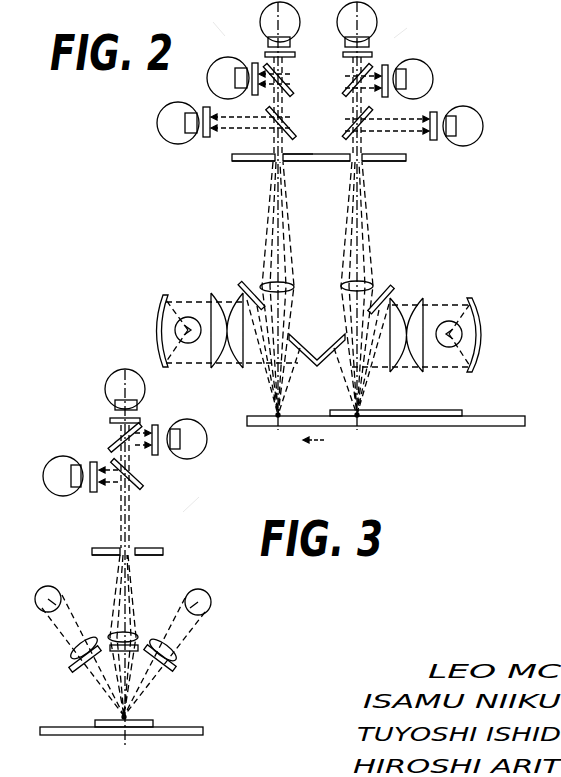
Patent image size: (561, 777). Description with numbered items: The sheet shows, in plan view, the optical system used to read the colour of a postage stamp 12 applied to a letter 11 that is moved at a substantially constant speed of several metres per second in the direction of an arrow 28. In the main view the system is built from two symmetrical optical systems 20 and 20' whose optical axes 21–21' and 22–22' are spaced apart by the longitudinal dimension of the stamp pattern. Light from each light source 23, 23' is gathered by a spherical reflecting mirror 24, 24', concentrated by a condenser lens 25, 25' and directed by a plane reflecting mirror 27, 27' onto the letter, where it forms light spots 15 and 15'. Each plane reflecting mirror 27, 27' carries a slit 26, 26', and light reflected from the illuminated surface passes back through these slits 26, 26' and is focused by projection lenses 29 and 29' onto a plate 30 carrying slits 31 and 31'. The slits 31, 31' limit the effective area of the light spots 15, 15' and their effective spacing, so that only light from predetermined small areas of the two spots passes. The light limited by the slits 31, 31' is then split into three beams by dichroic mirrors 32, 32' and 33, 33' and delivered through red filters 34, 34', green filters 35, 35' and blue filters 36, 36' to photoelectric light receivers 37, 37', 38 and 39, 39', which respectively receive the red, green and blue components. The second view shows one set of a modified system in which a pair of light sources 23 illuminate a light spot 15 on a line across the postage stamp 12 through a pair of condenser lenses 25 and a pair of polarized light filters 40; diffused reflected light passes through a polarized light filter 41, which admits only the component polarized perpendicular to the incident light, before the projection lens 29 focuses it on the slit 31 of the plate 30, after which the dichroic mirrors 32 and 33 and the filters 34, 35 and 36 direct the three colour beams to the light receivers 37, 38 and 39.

In FIG. 2, the letter 11 is at (487, 427).
In FIG. 3, the letter 11 is at (185, 736).
In FIG. 2, the postage stamp 12 is at (458, 409).
In FIG. 3, the postage stamp 12 is at (154, 724).
In FIG. 2, the light spot 15 is at (379, 396).
In FIG. 3, the light spot 15 is at (90, 709).
In FIG. 2, the light spot 15' is at (259, 404).
In FIG. 2, the optical system 20 is at (416, 23).
In FIG. 3, the optical system 20 is at (207, 494).
In FIG. 2, the optical system 20' is at (213, 18).
In FIG. 2, the optical axis 21 is at (375, 23).
In FIG. 3, the optical axis 21 is at (121, 376).
In FIG. 2, the optical axis 21' is at (365, 437).
In FIG. 3, the optical axis 21' is at (118, 742).
In FIG. 2, the optical axis 22 is at (297, 23).
In FIG. 2, the optical axis 22' is at (271, 436).
In FIG. 2, the light source 23 is at (445, 308).
In FIG. 3, the light source 23 is at (137, 590).
In FIG. 2, the light source 23' is at (188, 303).
In FIG. 2, the spherical reflecting mirror 24 is at (486, 348).
In FIG. 2, the spherical reflecting mirror 24' is at (146, 331).
In FIG. 2, the condenser lens 25 is at (414, 352).
In FIG. 3, the condenser lens 25 is at (125, 652).
In FIG. 2, the condenser lens 25' is at (228, 348).
In FIG. 2, the slit 26 is at (332, 337).
In FIG. 2, the slit 26' is at (317, 361).
In FIG. 2, the plane reflecting mirror 27 is at (354, 350).
In FIG. 2, the plane reflecting mirror 27' is at (284, 348).
In FIG. 2, the arrow 28 is at (327, 436).
In FIG. 2, the projection lens 29 is at (374, 276).
In FIG. 3, the projection lens 29 is at (141, 618).
In FIG. 2, the projection lens 29' is at (296, 282).
In FIG. 2, the plate 30 is at (302, 162).
In FIG. 3, the plate 30 is at (162, 553).
In FIG. 2, the slit 31 is at (384, 173).
In FIG. 3, the slit 31 is at (127, 535).
In FIG. 2, the slit 31' is at (249, 174).
In FIG. 2, the dichroic mirror 32 is at (317, 173).
In FIG. 3, the dichroic mirror 32 is at (151, 488).
In FIG. 2, the dichroic mirror 32' is at (308, 138).
In FIG. 2, the dichroic mirror 33 is at (349, 122).
In FIG. 3, the dichroic mirror 33 is at (110, 455).
In FIG. 2, the dichroic mirror 33' is at (298, 118).
In FIG. 2, the red filter 34 is at (397, 145).
In FIG. 3, the red filter 34 is at (92, 499).
In FIG. 2, the red filter 34' is at (235, 140).
In FIG. 2, the green filter 35 is at (396, 67).
In FIG. 3, the green filter 35 is at (140, 426).
In FIG. 2, the green filter 35' is at (265, 92).
In FIG. 2, the blue filter 36 is at (342, 74).
In FIG. 3, the blue filter 36 is at (103, 401).
In FIG. 2, the blue filter 36' is at (301, 52).
In FIG. 2, the photoelectric light receiver 37 is at (468, 142).
In FIG. 3, the photoelectric light receiver 37 is at (58, 465).
In FIG. 2, the photoelectric light receiver 37' is at (178, 112).
In FIG. 2, the photoelectric light receiver 38 is at (219, 50).
In FIG. 3, the photoelectric light receiver 38 is at (206, 424).
In FIG. 2, the photoelectric light receiver 39 is at (378, 64).
In FIG. 3, the photoelectric light receiver 39 is at (159, 416).
In FIG. 2, the photoelectric light receiver 39' is at (257, 59).
In FIG. 3, the polarized light filter 40 is at (74, 664).
In FIG. 3, the polarized light filter 41 is at (112, 637).